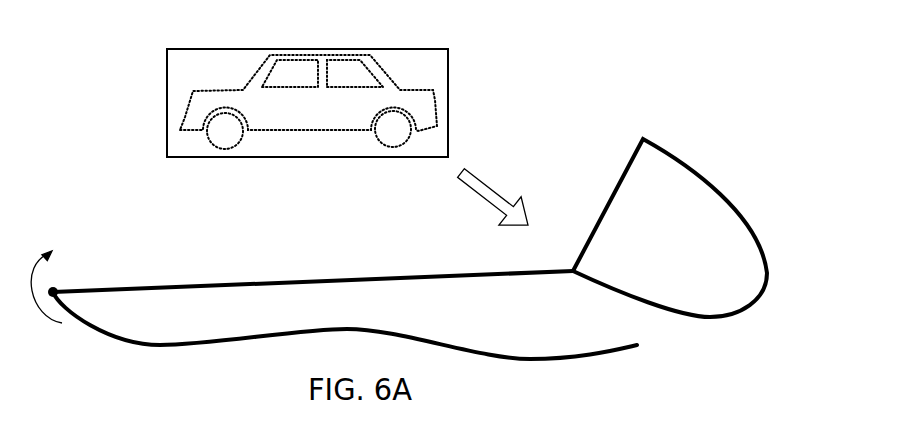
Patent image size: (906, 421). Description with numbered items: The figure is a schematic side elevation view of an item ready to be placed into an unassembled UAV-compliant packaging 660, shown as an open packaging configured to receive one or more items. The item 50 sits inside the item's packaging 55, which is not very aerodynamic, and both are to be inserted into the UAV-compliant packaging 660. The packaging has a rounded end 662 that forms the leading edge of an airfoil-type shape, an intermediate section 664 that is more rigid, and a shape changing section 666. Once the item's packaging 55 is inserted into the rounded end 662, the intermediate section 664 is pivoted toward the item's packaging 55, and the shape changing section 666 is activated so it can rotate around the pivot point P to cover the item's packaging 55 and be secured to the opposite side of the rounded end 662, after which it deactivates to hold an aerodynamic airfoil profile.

The item 50 is at (323, 110).
The item's packaging 55 is at (448, 77).
The UAV-compliant packaging 660 is at (677, 125).
The rounded end 662 is at (707, 317).
The intermediate section 664 is at (217, 287).
The shape changing section 666 is at (153, 347).
The pivot point P is at (53, 290).